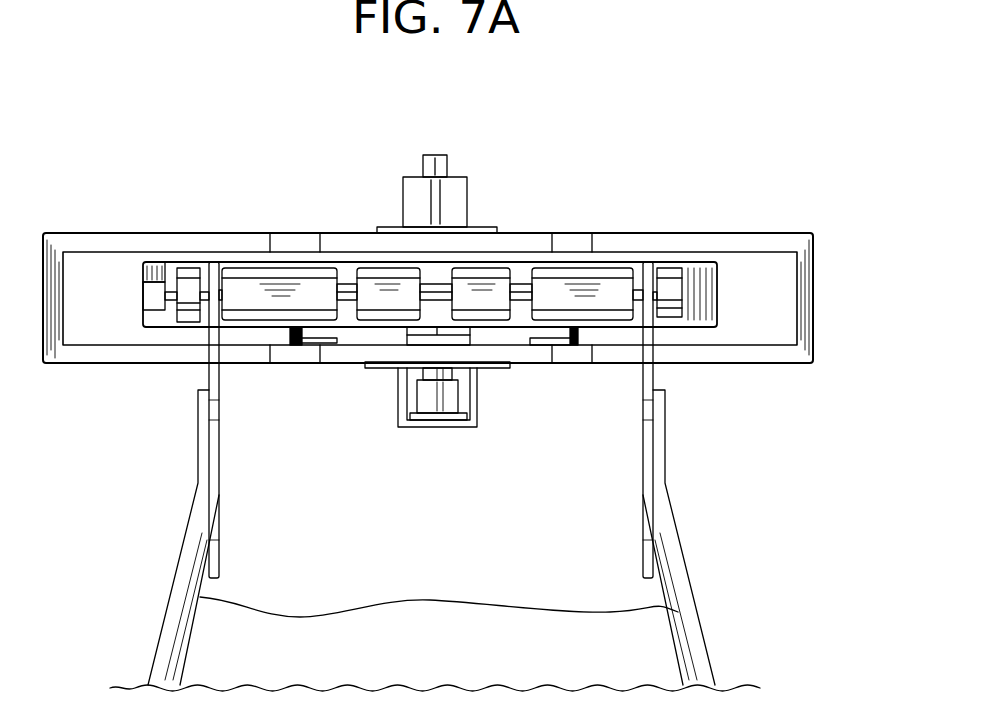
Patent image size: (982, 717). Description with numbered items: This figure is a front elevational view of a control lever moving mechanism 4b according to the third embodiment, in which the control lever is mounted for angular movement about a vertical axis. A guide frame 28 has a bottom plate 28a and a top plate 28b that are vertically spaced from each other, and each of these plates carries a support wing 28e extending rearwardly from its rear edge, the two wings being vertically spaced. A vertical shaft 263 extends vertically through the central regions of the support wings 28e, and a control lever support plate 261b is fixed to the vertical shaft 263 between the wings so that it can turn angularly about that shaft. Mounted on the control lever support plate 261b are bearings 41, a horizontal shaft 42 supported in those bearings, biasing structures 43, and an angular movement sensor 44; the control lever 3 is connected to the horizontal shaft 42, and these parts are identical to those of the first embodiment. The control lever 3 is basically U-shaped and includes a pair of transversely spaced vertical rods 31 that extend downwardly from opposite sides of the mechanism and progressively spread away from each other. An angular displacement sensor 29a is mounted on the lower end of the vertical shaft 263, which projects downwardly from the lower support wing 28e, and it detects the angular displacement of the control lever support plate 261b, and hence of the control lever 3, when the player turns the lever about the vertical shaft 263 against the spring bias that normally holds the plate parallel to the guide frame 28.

The control lever moving mechanism 4b is at (760, 155).
The guide frame 28 is at (93, 228).
The bottom plate 28a is at (617, 362).
The top plate 28b is at (652, 236).
The support wings 28e is at (284, 350).
The control lever support plate 261b is at (156, 266).
The vertical shaft 263 is at (447, 165).
The bearings 41 is at (188, 323).
The horizontal shaft 42 is at (516, 300).
The biasing structures 43 is at (588, 287).
The angular movement sensor 44 is at (157, 293).
The angular displacement sensor 29a is at (432, 397).
The control lever 3 is at (435, 476).
The vertical rods 31 is at (435, 476).